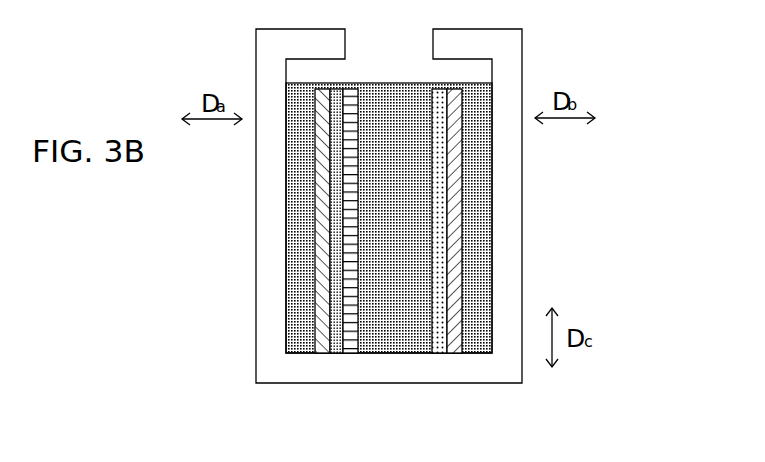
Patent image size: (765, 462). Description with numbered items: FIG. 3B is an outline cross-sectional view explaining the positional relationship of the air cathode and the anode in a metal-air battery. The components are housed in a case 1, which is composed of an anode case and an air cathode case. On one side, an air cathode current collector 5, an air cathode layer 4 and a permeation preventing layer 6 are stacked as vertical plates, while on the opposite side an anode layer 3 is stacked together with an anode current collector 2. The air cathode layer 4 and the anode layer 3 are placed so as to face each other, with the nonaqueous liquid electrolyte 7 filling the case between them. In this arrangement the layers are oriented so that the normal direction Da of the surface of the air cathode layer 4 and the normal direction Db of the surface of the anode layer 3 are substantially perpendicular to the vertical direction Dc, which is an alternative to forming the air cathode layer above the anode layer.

The case 1 is at (507, 223).
The anode current collector 2 is at (460, 350).
The anode layer 3 is at (440, 350).
The air cathode layer 4 is at (341, 350).
The air cathode current collector 5 is at (321, 350).
The permeation preventing layer 6 is at (356, 350).
The nonaqueous liquid electrolyte 7 is at (396, 330).